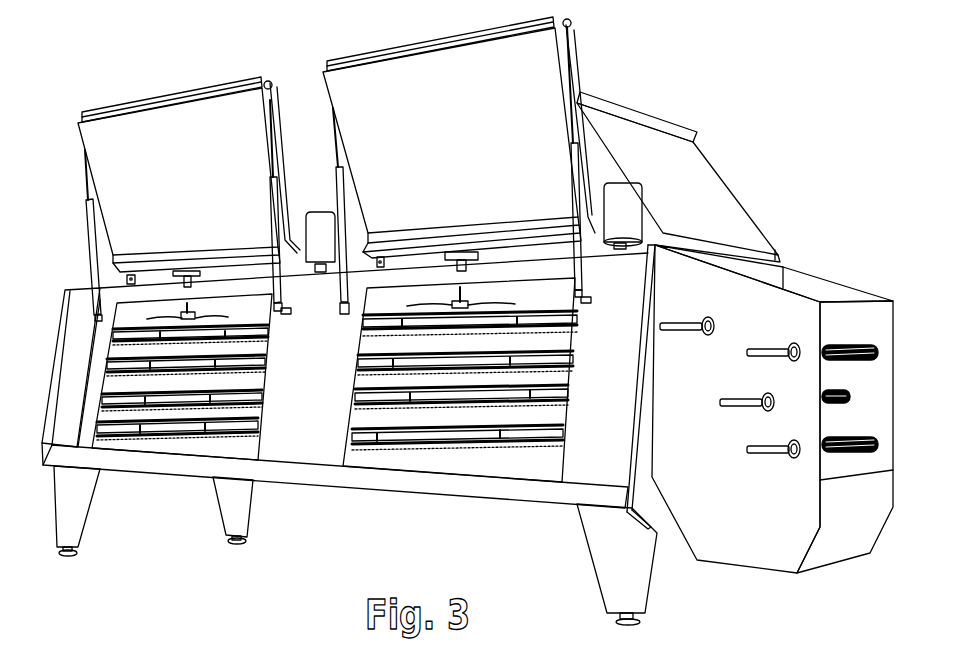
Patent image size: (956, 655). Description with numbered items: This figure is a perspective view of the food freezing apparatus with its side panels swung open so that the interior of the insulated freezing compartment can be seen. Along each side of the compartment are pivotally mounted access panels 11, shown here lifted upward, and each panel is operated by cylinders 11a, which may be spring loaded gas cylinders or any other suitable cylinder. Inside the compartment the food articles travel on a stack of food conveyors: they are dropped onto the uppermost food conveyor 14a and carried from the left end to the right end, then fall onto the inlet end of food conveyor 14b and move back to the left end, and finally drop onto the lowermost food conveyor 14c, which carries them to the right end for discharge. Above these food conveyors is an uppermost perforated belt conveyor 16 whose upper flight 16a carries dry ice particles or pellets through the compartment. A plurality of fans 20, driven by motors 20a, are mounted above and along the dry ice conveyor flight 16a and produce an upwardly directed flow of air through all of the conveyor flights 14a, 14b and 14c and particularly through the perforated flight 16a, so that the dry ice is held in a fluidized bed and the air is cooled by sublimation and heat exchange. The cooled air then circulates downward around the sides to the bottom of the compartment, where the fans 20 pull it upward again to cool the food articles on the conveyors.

The access panel 11 is at (197, 191).
The cylinder 11a is at (90, 268).
The uppermost food conveyor 14a is at (832, 346).
The food conveyor 14b is at (835, 390).
The lowermost food conveyor 14c is at (836, 437).
The perforated belt conveyor 16 is at (556, 338).
The upper flight 16a is at (558, 313).
The fan 20 is at (212, 314).
The motor 20a is at (626, 198).